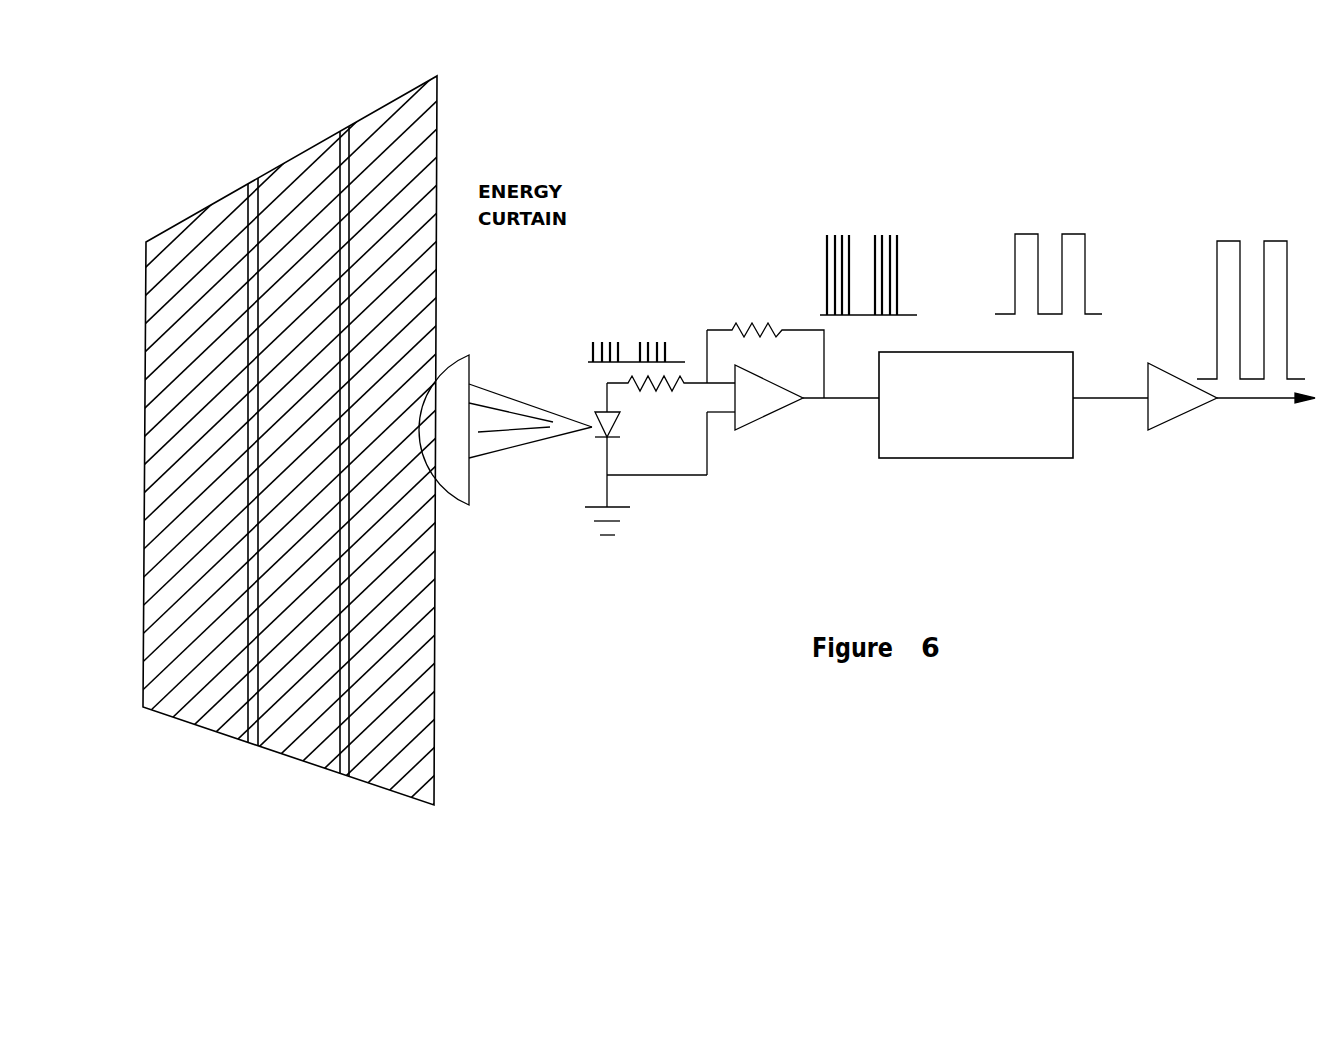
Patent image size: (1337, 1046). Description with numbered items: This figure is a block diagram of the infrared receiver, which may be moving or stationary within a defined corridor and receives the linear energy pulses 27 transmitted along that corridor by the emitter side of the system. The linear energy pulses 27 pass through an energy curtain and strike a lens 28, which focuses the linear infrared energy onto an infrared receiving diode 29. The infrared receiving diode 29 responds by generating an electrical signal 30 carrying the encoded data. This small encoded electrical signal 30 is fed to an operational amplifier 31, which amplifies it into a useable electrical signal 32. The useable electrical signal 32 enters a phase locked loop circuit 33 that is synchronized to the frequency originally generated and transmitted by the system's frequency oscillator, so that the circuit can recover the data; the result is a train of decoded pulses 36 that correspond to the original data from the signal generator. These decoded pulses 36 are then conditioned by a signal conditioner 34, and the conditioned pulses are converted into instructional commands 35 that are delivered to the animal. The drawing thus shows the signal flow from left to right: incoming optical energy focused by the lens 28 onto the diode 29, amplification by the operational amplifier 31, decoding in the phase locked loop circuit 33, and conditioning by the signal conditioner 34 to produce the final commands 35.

The linear energy pulses 27 is at (336, 123).
The lens 28 is at (483, 494).
The infrared receiving diode 29 is at (618, 423).
The electrical signal 30 is at (619, 331).
The operational amplifier 31 is at (798, 434).
The useable electrical signal 32 is at (818, 226).
The phase locked loop 33 is at (943, 338).
The signal conditioner 34 is at (1231, 433).
The instructional commands 35 is at (1254, 230).
The decoded pulses 36 is at (1045, 224).